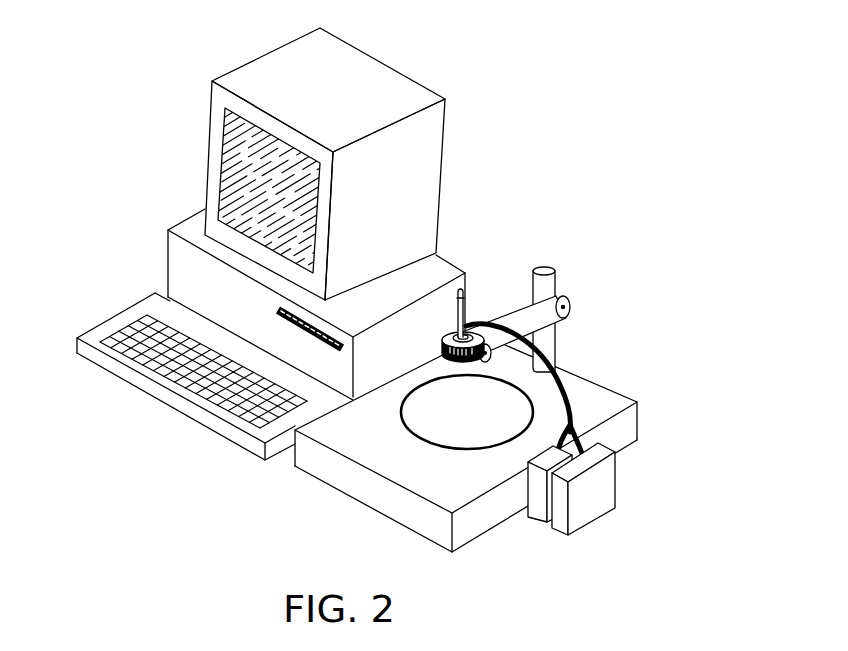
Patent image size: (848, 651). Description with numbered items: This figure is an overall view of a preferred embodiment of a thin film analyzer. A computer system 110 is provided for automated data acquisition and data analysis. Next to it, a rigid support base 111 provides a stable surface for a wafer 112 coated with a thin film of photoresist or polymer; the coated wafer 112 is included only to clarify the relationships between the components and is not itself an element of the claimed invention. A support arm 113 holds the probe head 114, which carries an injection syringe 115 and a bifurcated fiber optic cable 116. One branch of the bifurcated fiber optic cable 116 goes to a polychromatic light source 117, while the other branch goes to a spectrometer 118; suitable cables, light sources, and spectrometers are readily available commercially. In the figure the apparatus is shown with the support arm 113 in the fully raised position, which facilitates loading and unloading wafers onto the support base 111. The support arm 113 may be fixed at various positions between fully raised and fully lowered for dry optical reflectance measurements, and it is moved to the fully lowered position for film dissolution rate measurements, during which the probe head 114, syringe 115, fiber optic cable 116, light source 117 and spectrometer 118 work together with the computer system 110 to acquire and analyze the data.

The computer system 110 is at (146, 188).
The rigid support base 111 is at (337, 490).
The wafer 112 is at (467, 451).
The support arm 113 is at (508, 292).
The probe head 114 is at (446, 334).
The injection syringe 115 is at (472, 315).
The bifurcated fiber optic cable 116 is at (573, 368).
The polychromatic light source 117 is at (532, 520).
The spectrometer 118 is at (615, 478).